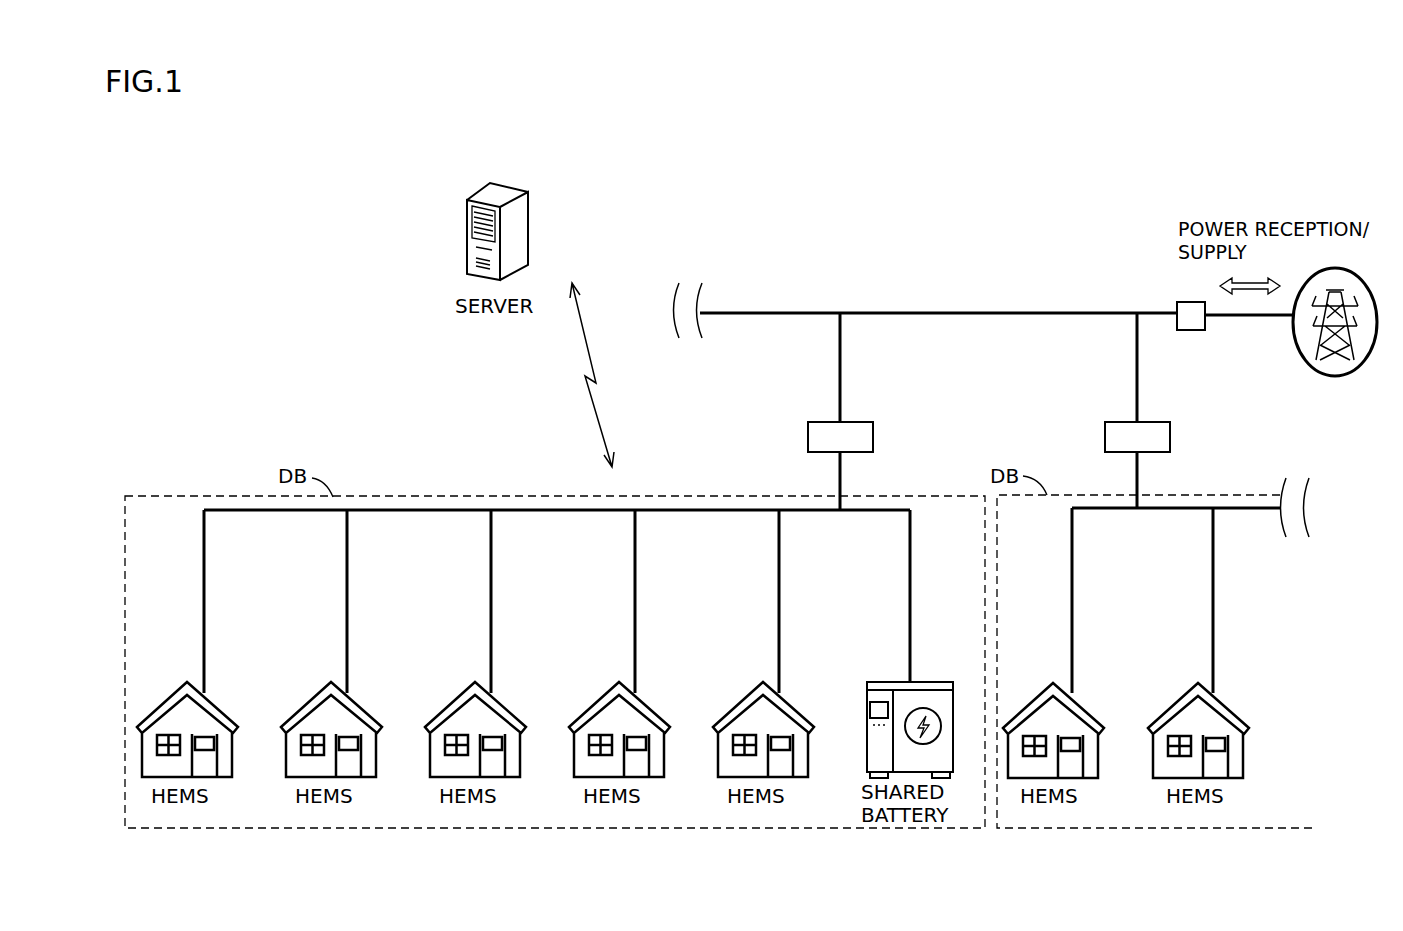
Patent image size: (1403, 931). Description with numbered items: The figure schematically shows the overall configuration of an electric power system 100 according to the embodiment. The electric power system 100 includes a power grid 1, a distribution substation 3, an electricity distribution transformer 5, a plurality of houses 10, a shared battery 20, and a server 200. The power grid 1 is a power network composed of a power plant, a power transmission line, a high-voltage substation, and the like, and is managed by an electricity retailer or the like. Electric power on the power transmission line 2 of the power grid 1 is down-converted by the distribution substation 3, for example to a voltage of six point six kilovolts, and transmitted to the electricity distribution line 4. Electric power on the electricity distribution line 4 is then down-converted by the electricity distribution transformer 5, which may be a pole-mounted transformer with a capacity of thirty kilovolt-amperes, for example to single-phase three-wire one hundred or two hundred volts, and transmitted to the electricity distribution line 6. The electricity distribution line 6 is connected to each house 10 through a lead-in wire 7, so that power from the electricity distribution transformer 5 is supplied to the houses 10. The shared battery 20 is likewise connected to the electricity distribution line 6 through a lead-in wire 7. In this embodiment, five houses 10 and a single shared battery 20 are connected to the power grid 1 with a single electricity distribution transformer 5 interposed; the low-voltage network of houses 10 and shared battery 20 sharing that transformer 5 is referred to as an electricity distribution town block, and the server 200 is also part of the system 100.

The electric power system 100 is at (246, 159).
The server 200 is at (508, 192).
The power grid 1 is at (1355, 270).
The power transmission line 2 is at (1262, 318).
The distribution substation 3 is at (1190, 331).
The electricity distribution line 4 is at (985, 312).
The electricity distribution transformer 5 is at (858, 422).
The electricity distribution line 6 is at (739, 509).
The lead-in wire 7 is at (208, 598).
The house 10 is at (215, 697).
The shared battery 20 is at (935, 682).